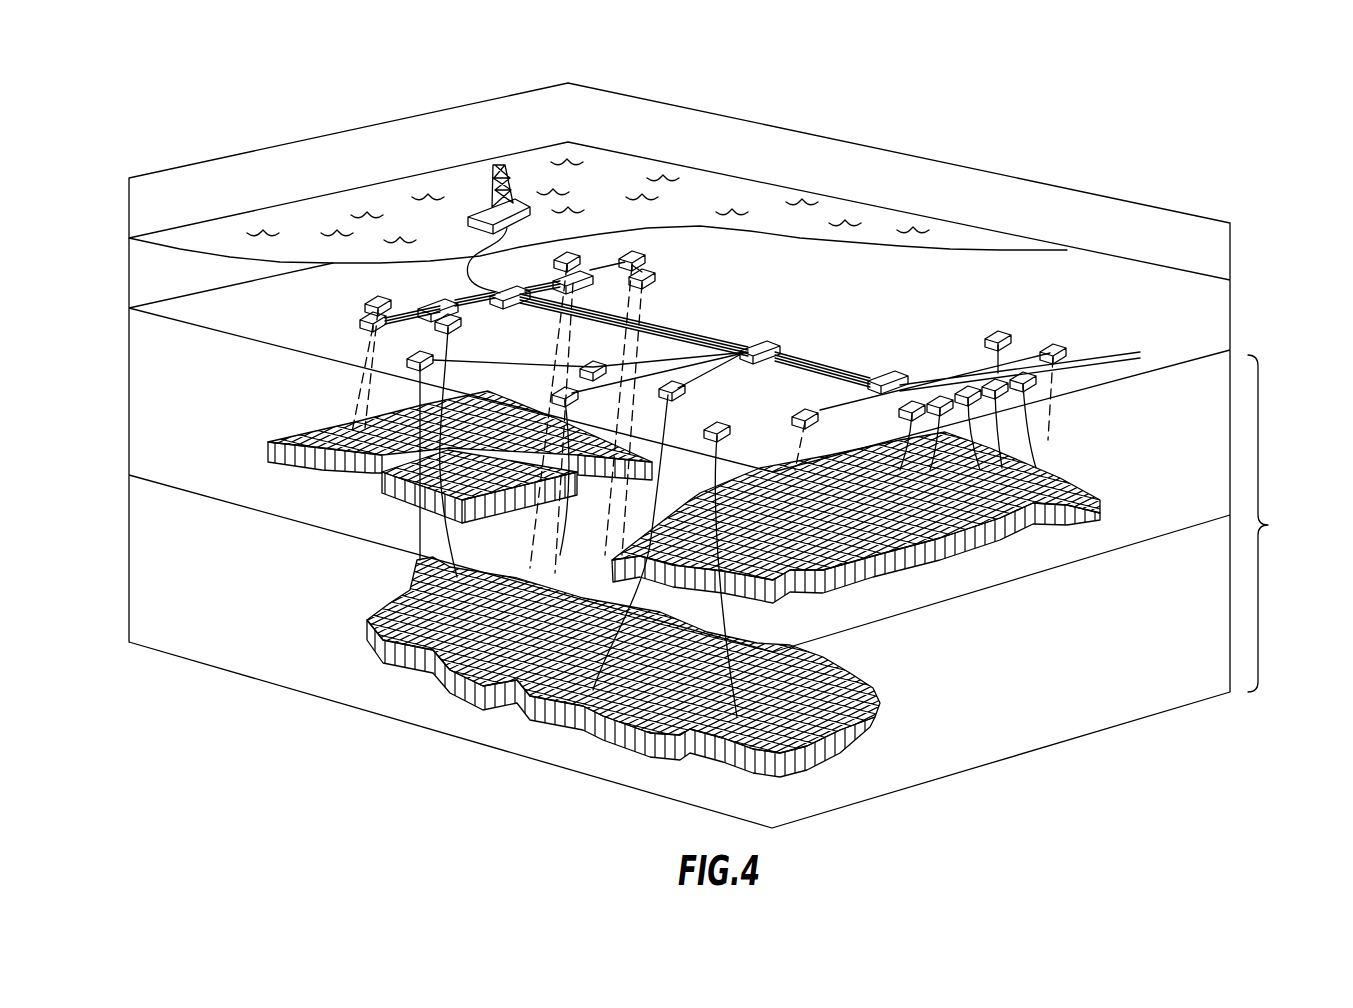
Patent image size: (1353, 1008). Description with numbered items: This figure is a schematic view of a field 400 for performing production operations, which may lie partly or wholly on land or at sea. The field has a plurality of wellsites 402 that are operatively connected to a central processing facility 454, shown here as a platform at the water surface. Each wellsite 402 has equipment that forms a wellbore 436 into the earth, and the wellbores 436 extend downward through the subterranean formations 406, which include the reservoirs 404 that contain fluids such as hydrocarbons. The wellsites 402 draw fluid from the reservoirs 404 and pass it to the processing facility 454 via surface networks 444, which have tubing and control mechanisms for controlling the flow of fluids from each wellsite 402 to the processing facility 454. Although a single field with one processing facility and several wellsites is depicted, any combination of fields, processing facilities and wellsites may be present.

The field 400 is at (180, 104).
The central processing facility 454 is at (478, 186).
The wellsites 402 is at (1058, 333).
The surface networks 444 is at (407, 322).
The wellbore 436 is at (1040, 467).
The reservoirs 404 is at (862, 745).
The subterranean formations 406 is at (1270, 525).